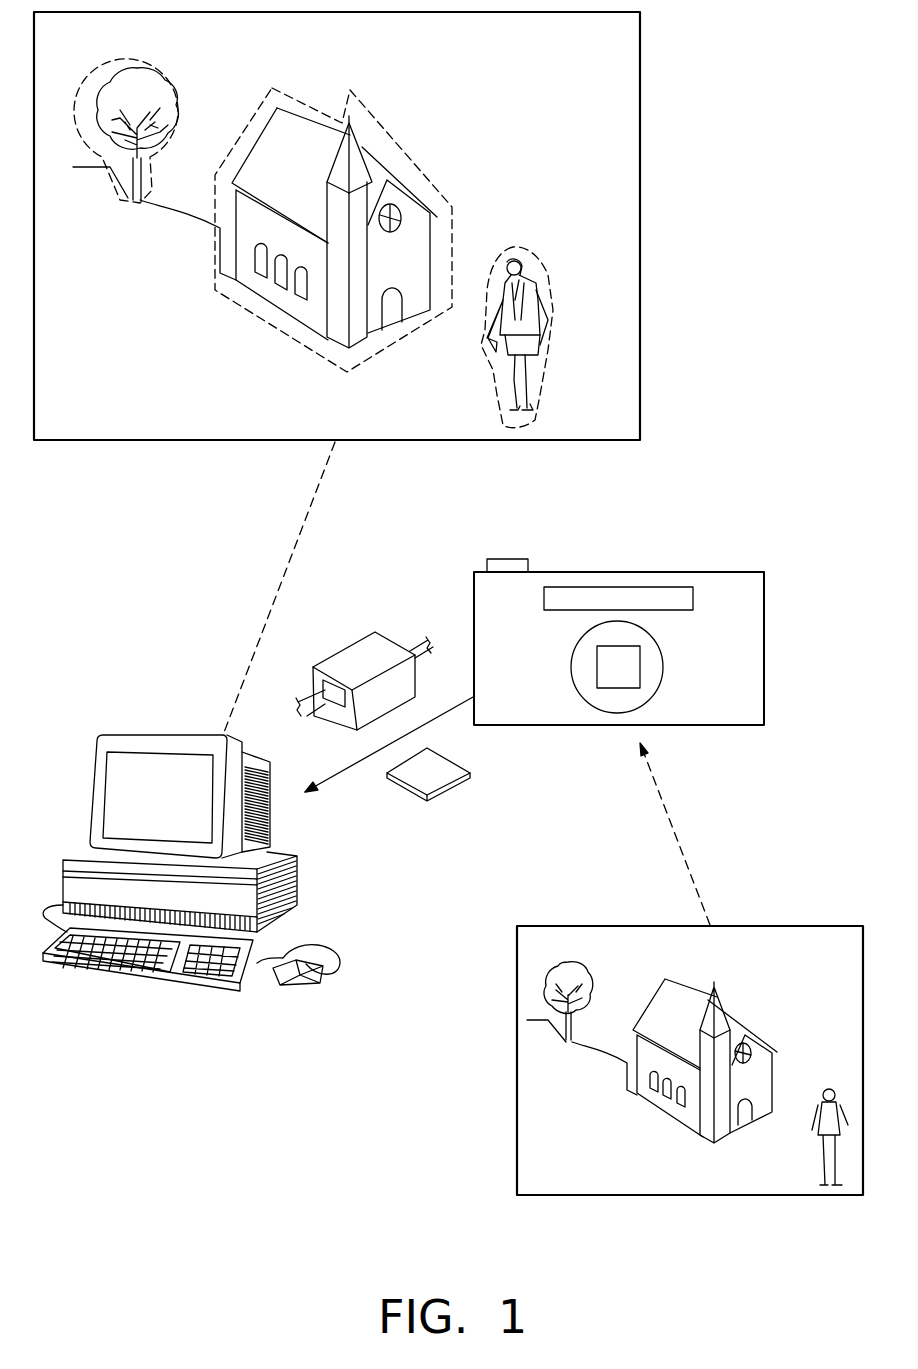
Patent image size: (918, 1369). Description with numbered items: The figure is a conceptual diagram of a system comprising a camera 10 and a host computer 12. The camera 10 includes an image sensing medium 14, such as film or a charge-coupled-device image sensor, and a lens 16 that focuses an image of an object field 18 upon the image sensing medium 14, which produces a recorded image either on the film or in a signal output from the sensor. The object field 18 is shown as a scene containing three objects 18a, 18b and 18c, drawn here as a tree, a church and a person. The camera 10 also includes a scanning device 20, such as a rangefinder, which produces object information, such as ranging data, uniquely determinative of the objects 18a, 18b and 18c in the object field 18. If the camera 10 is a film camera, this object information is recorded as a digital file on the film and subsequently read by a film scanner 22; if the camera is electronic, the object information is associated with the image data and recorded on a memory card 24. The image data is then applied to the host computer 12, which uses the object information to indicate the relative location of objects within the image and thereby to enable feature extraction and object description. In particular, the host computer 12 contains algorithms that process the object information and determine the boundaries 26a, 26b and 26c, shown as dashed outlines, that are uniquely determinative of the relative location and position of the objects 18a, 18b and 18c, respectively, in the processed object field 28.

The camera 10 is at (653, 620).
The host computer 12 is at (270, 802).
The image sensing medium 14 is at (597, 657).
The lens 16 is at (665, 665).
The object field 18 is at (517, 1060).
The object 18a is at (107, 97).
The object 18b is at (290, 105).
The object 18c is at (497, 370).
The scanning device 20 is at (620, 587).
The film scanner 22 is at (343, 648).
The memory card 24 is at (448, 787).
The boundary 26a is at (193, 90).
The boundary 26b is at (370, 123).
The boundary 26c is at (553, 287).
The processed object field 28 is at (640, 138).